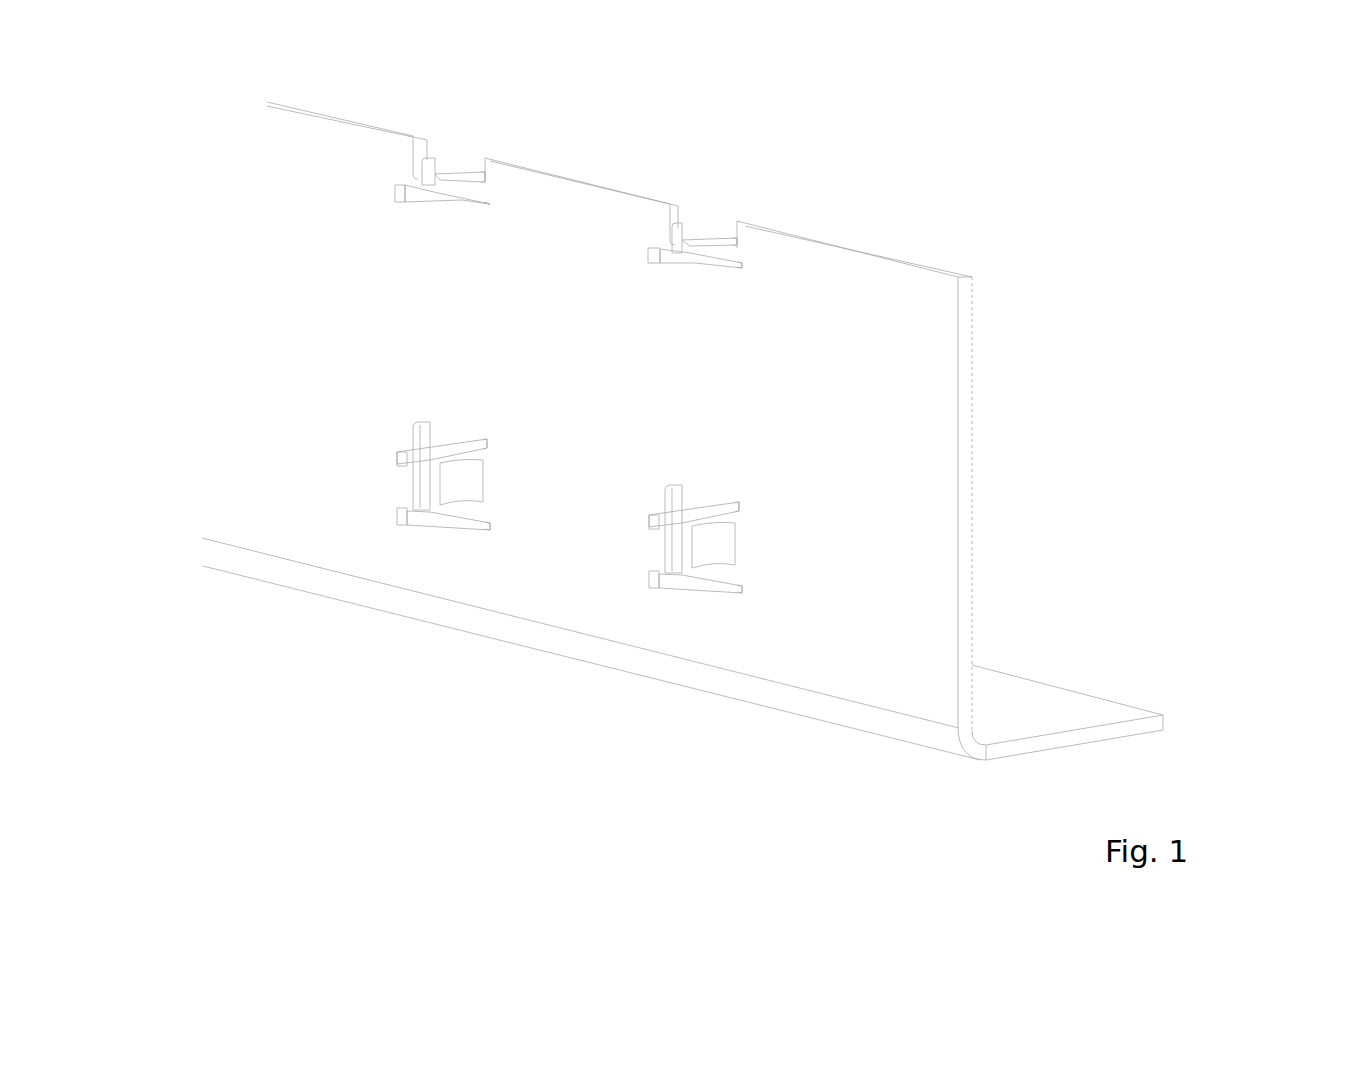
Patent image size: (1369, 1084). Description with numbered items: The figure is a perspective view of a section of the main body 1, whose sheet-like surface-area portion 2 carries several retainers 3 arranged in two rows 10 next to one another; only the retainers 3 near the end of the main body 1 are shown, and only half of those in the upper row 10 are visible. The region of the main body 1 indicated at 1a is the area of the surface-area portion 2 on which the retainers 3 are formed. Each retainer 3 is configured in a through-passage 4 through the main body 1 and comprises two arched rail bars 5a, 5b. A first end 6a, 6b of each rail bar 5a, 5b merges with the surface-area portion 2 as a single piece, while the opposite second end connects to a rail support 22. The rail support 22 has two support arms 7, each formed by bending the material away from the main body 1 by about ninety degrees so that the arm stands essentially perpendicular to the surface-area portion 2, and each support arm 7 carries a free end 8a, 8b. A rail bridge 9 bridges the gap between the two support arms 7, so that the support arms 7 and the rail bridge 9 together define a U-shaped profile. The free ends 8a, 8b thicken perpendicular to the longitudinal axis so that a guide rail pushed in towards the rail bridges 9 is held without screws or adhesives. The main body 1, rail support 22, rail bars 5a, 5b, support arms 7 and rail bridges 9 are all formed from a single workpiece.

The main body 1 is at (777, 520).
The panel region 1a is at (1107, 286).
The surface-area portion 2 is at (835, 397).
The rail support 22 is at (804, 648).
The retainer 3 is at (565, 465).
The through-passage 4 is at (427, 125).
The rail bar 5a is at (473, 183).
The rail bar 5b is at (473, 512).
The first end 6a is at (480, 188).
The first end 6b is at (485, 512).
The support arm 7 is at (433, 193).
The free end 8a is at (397, 190).
The free end 8b is at (400, 522).
The rail bridge 9 is at (437, 168).
The row 10 is at (1107, 348).